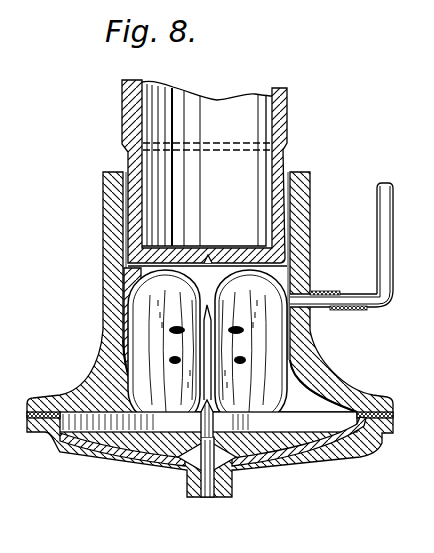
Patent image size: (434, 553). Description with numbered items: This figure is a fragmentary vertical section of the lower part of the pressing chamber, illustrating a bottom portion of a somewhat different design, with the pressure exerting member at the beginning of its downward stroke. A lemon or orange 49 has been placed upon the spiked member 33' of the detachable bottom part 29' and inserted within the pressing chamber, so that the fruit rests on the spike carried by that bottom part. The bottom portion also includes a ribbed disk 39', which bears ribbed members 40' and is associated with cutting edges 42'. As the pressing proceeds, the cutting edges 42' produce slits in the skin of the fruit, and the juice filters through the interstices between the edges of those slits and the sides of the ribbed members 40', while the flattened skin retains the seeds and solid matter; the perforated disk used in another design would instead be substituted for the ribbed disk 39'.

The lemon or orange 49 is at (262, 350).
The cutting edges 42' is at (210, 402).
The detachable bottom part 29' is at (210, 347).
The ribbed disk 39' is at (234, 391).
The spiked member 33' is at (233, 461).
The ribbed members 40' is at (213, 462).